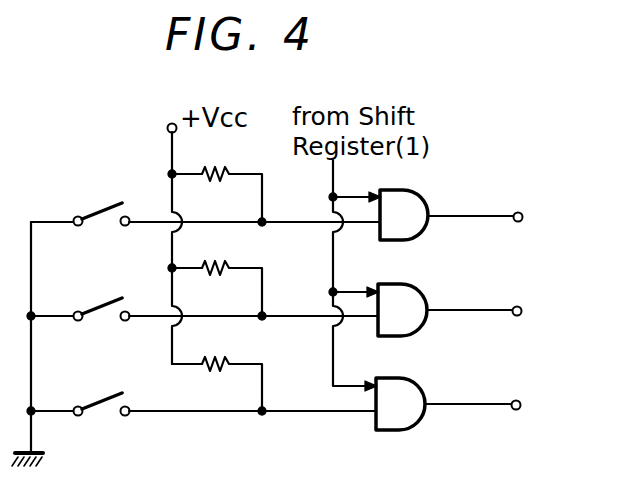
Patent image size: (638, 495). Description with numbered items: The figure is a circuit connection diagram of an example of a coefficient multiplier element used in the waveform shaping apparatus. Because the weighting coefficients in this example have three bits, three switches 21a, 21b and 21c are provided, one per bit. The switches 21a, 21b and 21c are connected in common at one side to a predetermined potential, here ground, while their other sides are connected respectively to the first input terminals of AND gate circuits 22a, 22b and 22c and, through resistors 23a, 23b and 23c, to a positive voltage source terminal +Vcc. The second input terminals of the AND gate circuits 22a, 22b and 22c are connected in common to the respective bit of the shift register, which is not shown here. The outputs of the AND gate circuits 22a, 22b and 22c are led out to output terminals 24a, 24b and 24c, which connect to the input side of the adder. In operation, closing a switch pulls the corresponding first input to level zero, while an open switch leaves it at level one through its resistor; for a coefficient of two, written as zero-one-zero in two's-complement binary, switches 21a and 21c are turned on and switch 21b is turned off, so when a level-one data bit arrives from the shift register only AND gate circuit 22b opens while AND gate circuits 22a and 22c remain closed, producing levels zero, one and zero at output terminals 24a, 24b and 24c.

The switch 21a is at (102, 204).
The switch 21b is at (102, 301).
The switch 21c is at (102, 397).
The AND gate circuit 22a is at (432, 203).
The AND gate circuit 22b is at (431, 298).
The AND gate circuit 22c is at (429, 403).
The resistor 23a is at (213, 175).
The resistor 23b is at (217, 270).
The resistor 23c is at (221, 365).
The output terminal 24a is at (544, 202).
The output terminal 24b is at (522, 311).
The output terminal 24c is at (521, 404).